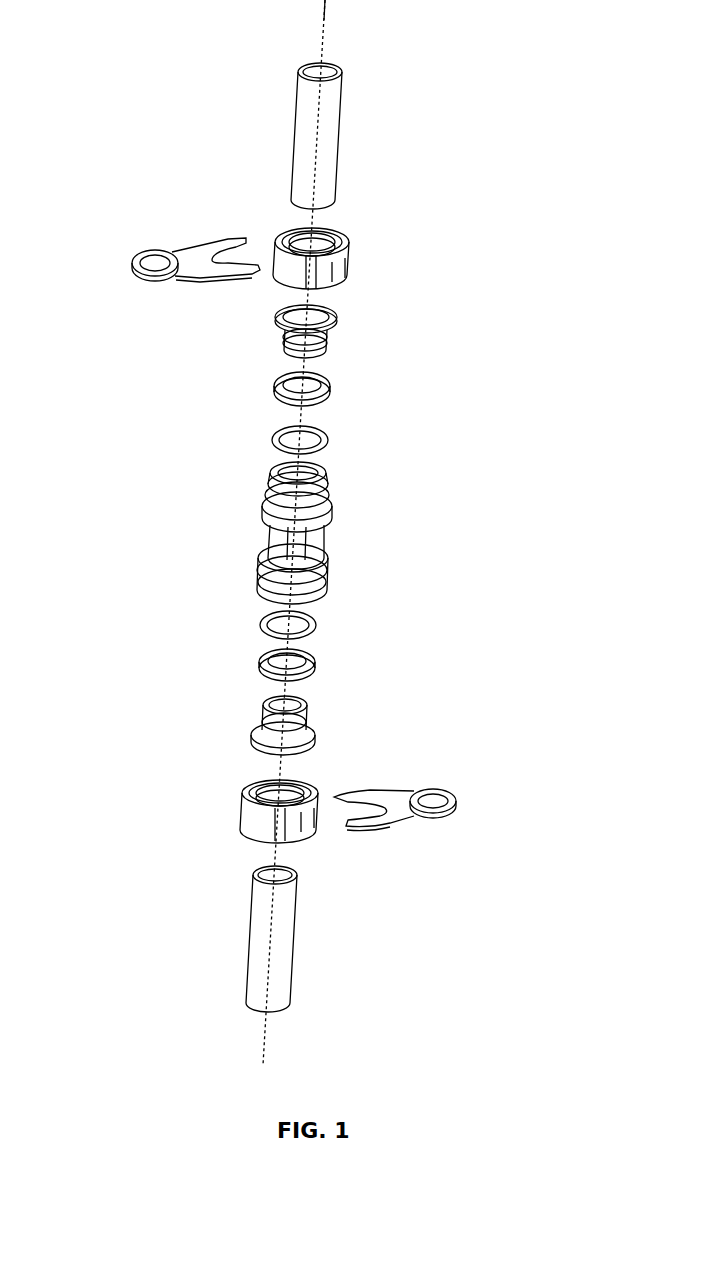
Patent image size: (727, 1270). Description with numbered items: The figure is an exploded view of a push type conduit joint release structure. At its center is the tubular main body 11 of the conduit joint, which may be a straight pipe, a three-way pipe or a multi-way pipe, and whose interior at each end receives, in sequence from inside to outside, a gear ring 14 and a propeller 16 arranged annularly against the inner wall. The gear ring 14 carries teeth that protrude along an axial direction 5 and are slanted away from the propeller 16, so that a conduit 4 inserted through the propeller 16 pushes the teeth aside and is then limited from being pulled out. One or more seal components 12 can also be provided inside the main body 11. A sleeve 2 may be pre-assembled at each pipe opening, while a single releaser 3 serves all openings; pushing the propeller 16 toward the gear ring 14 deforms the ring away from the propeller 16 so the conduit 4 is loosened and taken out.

The sleeve 2 is at (349, 243).
The releaser 3 is at (132, 268).
The conduit 4 is at (328, 133).
The axial direction 5 is at (322, 22).
The main body 11 is at (318, 540).
The seal component 12 is at (328, 441).
The gear ring 14 is at (332, 393).
The propeller 16 is at (336, 318).